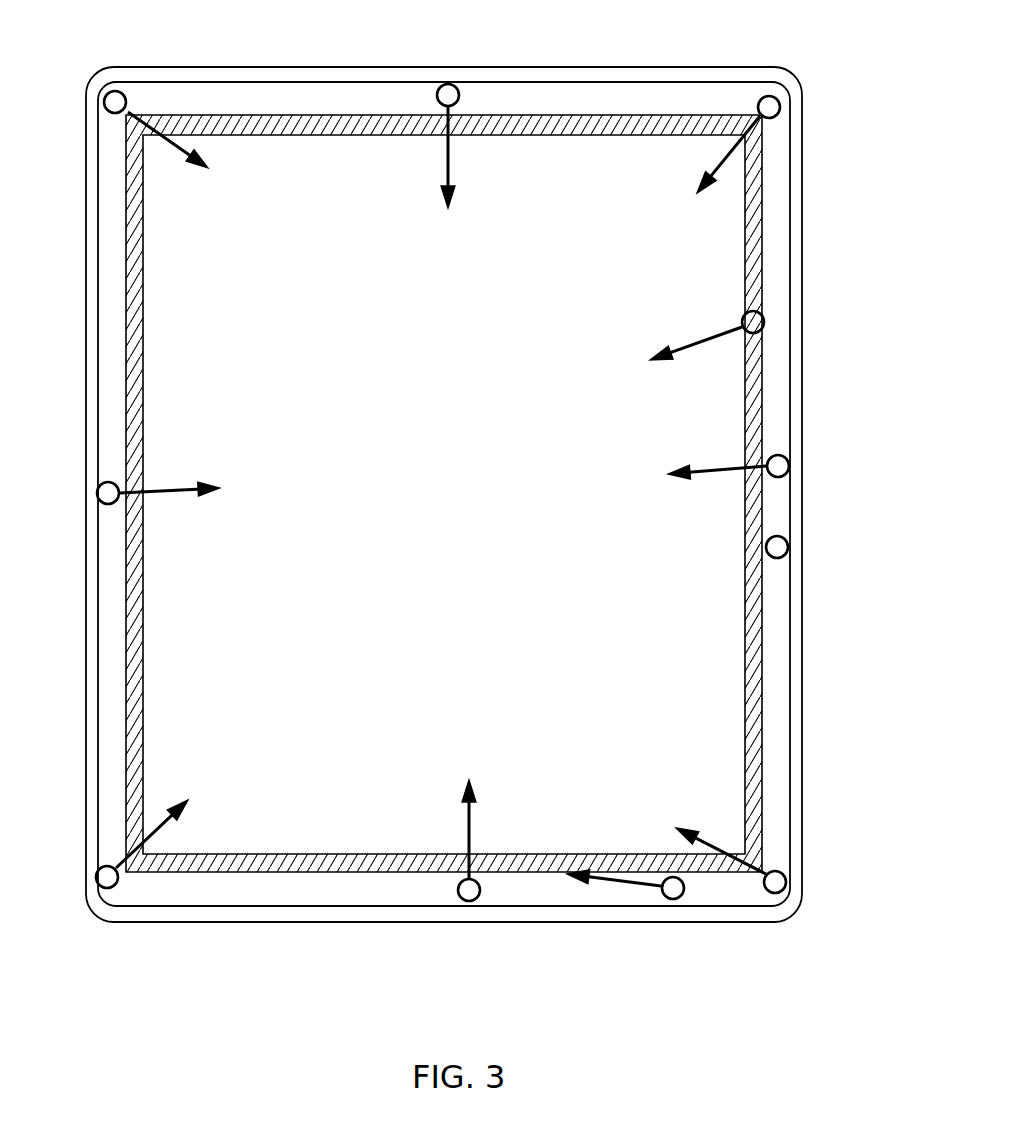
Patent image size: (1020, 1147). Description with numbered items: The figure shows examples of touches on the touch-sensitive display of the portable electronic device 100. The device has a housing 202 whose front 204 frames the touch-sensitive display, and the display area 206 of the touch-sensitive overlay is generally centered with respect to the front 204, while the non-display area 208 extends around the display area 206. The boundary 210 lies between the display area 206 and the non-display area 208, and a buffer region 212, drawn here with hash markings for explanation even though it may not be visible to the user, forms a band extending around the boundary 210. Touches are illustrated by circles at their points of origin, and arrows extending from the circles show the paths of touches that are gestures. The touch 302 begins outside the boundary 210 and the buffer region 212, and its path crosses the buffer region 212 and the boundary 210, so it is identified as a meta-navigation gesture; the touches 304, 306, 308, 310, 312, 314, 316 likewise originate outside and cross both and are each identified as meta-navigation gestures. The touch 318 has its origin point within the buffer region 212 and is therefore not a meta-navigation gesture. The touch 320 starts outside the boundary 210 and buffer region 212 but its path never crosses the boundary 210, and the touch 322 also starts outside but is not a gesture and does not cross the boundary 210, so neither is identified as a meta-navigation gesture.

The portable electronic device 100 is at (454, 525).
The housing 202 is at (263, 67).
The front 204 is at (590, 76).
The display area 206 is at (677, 280).
The non-display area 208 is at (770, 720).
The boundary 210 is at (747, 652).
The buffer region 212 is at (755, 402).
The touch 302 is at (469, 901).
The touch 304 is at (97, 487).
The touch 306 is at (787, 460).
The touch 308 is at (455, 86).
The touch 310 is at (124, 92).
The touch 312 is at (780, 100).
The touch 314 is at (113, 887).
The touch 316 is at (783, 875).
The touch 318 is at (760, 313).
The touch 320 is at (673, 900).
The touch 322 is at (786, 540).